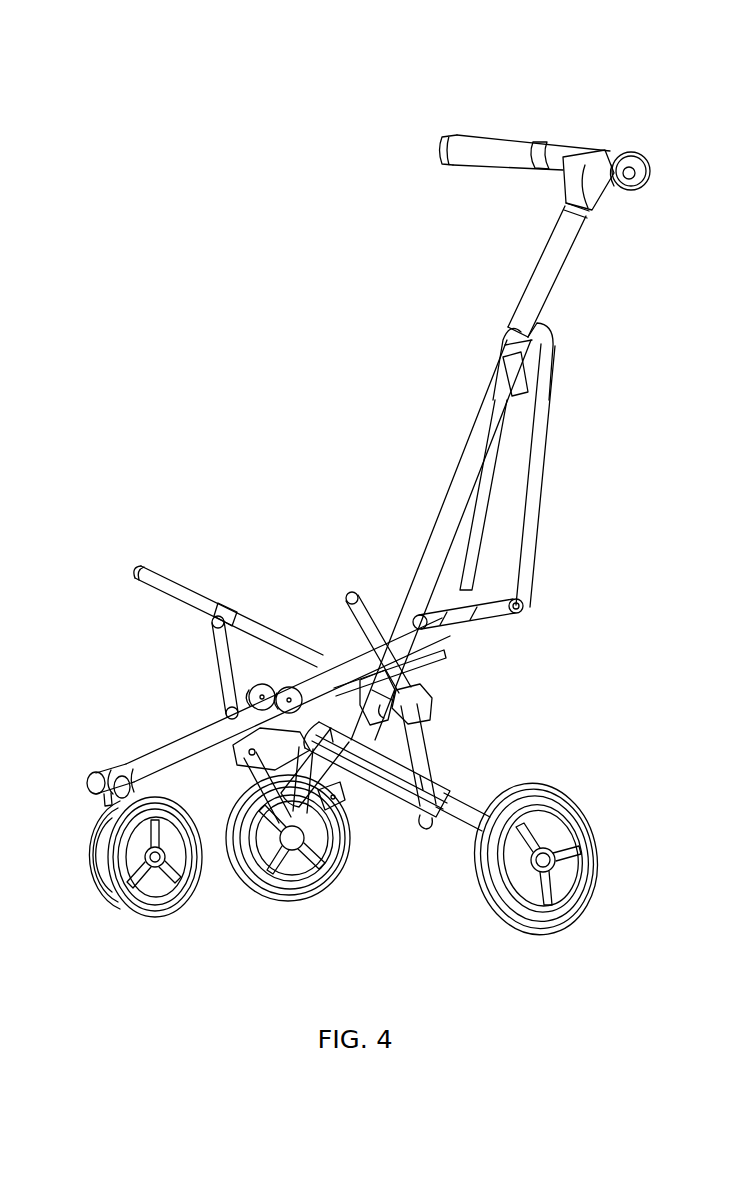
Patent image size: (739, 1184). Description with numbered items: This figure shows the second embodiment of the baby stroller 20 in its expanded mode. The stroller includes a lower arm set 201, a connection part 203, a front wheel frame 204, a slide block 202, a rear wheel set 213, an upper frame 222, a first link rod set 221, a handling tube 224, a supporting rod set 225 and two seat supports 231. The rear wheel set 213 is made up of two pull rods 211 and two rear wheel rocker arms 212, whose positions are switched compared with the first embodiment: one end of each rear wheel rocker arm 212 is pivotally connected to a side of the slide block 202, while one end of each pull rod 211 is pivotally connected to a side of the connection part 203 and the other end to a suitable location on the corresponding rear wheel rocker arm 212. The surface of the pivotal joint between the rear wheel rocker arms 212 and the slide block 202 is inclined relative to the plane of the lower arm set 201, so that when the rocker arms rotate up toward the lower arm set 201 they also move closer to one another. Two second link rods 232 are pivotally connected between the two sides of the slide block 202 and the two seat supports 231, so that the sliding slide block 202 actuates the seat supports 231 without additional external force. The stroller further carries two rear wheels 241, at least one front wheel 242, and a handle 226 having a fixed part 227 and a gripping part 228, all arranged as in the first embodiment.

The baby stroller 20 is at (243, 301).
The lower arm set 201 is at (153, 764).
The slide block 202 is at (317, 660).
The connection part 203 is at (420, 658).
The front wheel frame 204 is at (108, 774).
The pull rods 211 is at (448, 808).
The rear wheel rocker arms 212 is at (380, 791).
The rear wheel set 213 is at (367, 905).
The first link rod set 221 is at (473, 620).
The upper frame 222 is at (462, 478).
The handling tube 224 is at (557, 264).
The supporting rod set 225 is at (537, 463).
The handle 226 is at (503, 46).
The fixed part 227 is at (567, 148).
The gripping part 228 is at (505, 148).
The seat supports 231 is at (167, 590).
The second link rods 232 is at (215, 656).
The rear wheels 241 is at (505, 919).
The front wheel 242 is at (130, 906).